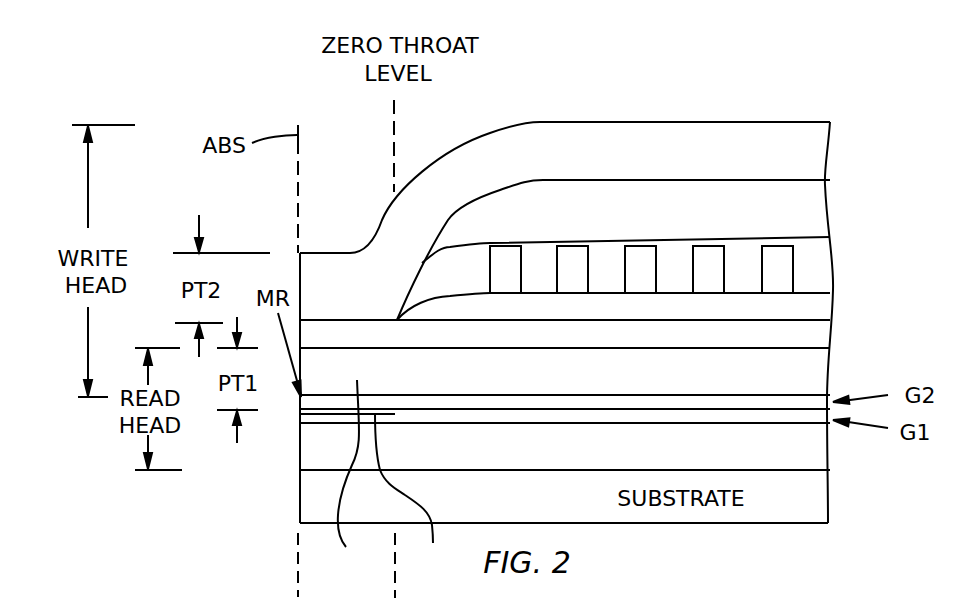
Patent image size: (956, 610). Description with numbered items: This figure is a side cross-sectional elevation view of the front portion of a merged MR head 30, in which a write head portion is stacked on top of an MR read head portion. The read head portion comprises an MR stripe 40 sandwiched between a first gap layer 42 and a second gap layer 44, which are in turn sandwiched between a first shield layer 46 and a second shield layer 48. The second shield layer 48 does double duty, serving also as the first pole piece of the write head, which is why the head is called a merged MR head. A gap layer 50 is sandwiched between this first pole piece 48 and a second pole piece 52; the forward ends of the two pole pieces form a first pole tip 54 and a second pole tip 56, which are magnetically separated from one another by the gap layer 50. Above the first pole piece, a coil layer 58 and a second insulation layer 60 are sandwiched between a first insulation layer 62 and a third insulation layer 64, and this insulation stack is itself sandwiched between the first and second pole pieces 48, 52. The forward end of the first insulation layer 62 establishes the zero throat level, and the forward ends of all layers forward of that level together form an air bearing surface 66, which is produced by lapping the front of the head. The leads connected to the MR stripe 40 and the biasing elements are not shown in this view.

The merged MR head 30 is at (706, 90).
The MR stripe 40 is at (412, 494).
The first gap layer 42 is at (817, 415).
The second gap layer 44 is at (818, 400).
The first shield layer 46 is at (810, 455).
The second shield layer 48 is at (805, 368).
The gap layer 50 is at (810, 333).
The second pole piece 52 is at (768, 135).
The first pole tip 54 is at (357, 473).
The second pole tip 56 is at (308, 280).
The coil layer 58 is at (710, 245).
The second insulation layer 60 is at (750, 268).
The first insulation layer 62 is at (813, 305).
The third insulation layer 64 is at (795, 197).
The air bearing surface 66 is at (297, 292).